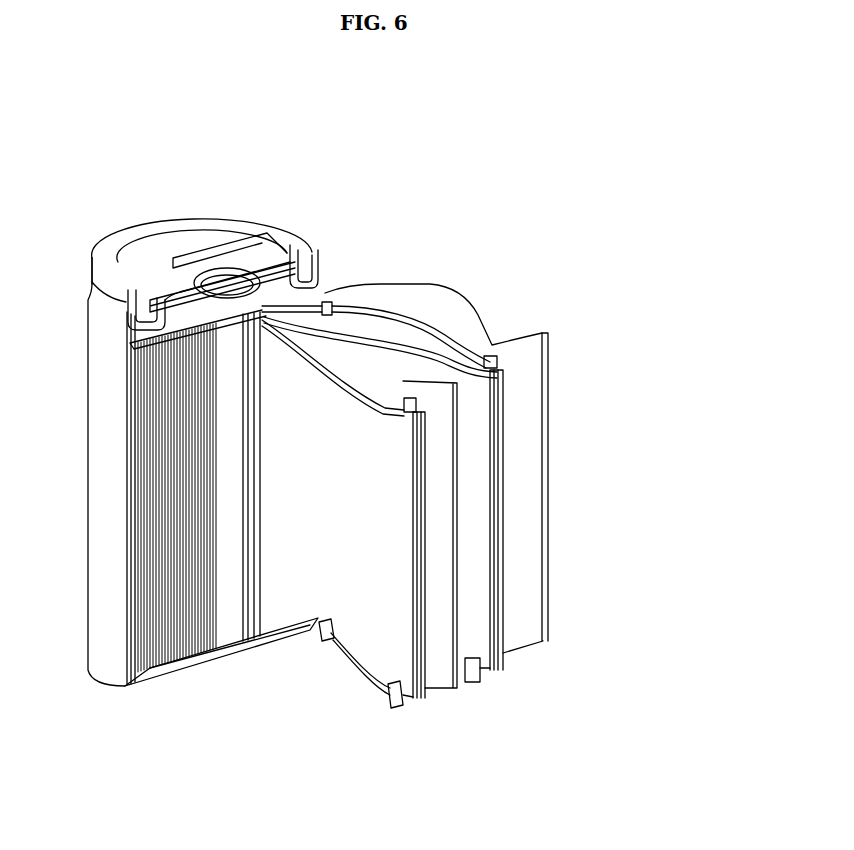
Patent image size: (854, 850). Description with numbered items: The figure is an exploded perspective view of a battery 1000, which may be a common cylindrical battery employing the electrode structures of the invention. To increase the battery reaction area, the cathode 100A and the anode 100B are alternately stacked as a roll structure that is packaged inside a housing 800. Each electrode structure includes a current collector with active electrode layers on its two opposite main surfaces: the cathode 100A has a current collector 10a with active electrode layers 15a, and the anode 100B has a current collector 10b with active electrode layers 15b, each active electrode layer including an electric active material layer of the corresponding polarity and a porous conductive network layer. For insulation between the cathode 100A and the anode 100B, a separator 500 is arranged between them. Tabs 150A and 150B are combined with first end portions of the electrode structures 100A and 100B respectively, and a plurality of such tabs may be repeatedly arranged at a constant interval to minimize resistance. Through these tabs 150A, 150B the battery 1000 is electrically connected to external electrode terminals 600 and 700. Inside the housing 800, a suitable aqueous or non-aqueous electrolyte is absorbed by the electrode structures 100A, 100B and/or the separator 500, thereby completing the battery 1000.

The battery 1000 is at (366, 170).
The external electrode terminal 700 is at (200, 221).
The housing 800 is at (105, 623).
The external electrode terminal 600 is at (180, 672).
The separator 500 is at (547, 507).
The tab 150A is at (305, 330).
The tab 150B is at (446, 296).
The cathode electrode structure 100A is at (508, 733).
The anode electrode structure 100B is at (592, 653).
The current collector 10a is at (418, 702).
The active electrode layer 15a is at (415, 700).
The current collector 10b is at (500, 675).
The active electrode layer 15b is at (505, 667).